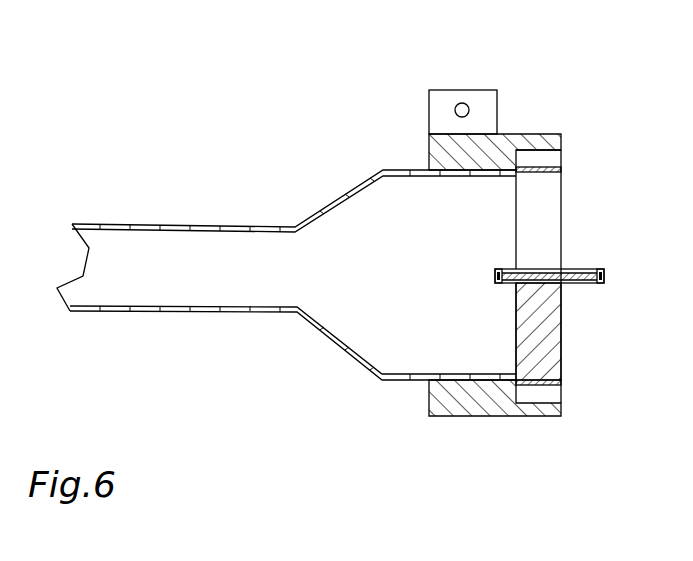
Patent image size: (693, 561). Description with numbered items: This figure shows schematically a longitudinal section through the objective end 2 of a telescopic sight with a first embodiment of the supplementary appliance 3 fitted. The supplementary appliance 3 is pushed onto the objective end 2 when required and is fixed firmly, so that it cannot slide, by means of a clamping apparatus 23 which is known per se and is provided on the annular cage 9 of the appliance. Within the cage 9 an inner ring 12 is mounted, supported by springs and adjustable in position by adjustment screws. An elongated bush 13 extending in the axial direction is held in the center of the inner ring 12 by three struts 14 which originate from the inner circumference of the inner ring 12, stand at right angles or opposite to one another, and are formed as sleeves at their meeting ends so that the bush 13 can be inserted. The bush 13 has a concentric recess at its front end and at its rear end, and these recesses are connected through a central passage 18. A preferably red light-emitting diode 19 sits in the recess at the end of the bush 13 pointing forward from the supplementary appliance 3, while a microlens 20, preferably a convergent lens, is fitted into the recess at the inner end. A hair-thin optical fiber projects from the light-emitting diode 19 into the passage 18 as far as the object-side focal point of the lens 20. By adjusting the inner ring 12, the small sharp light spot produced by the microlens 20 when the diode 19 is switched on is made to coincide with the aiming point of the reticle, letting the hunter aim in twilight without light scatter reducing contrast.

The objective end 2 is at (347, 343).
The supplementary appliance 3 is at (375, 140).
The annular cage 9 is at (465, 403).
The inner ring 12 is at (552, 165).
The bush 13 is at (568, 287).
The struts 14 is at (543, 363).
The central passage 18 is at (562, 267).
The light-emitting diode 19 is at (605, 282).
The microlens 20 is at (497, 281).
The clamping apparatus 23 is at (452, 100).